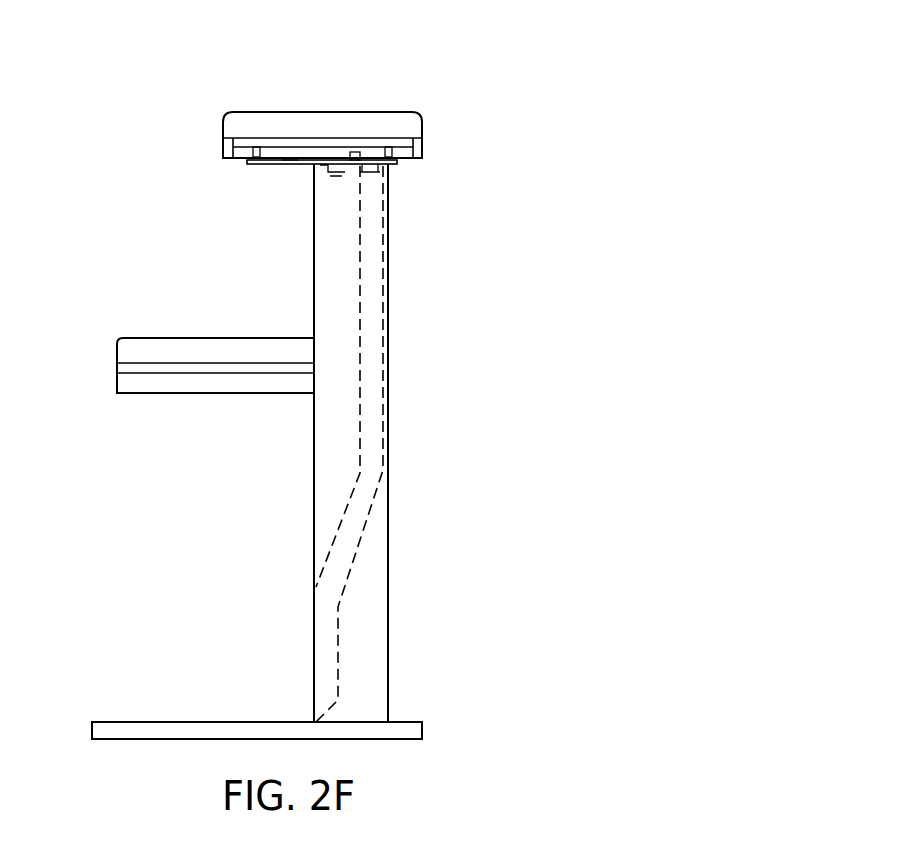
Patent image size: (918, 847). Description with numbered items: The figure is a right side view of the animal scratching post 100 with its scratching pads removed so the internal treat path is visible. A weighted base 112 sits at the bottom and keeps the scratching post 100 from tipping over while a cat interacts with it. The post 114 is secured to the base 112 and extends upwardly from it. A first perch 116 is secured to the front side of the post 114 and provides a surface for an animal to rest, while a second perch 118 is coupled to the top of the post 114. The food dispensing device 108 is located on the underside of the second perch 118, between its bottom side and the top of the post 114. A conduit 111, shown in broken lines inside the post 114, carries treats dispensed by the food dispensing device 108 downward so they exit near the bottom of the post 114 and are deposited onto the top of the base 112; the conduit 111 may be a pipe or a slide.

The animal scratching post 100 is at (498, 77).
The second perch 118 is at (223, 129).
The food dispensing device 108 is at (290, 164).
The post 114 is at (314, 507).
The conduit 111 is at (362, 533).
The first perch 116 is at (117, 383).
The base 112 is at (92, 734).